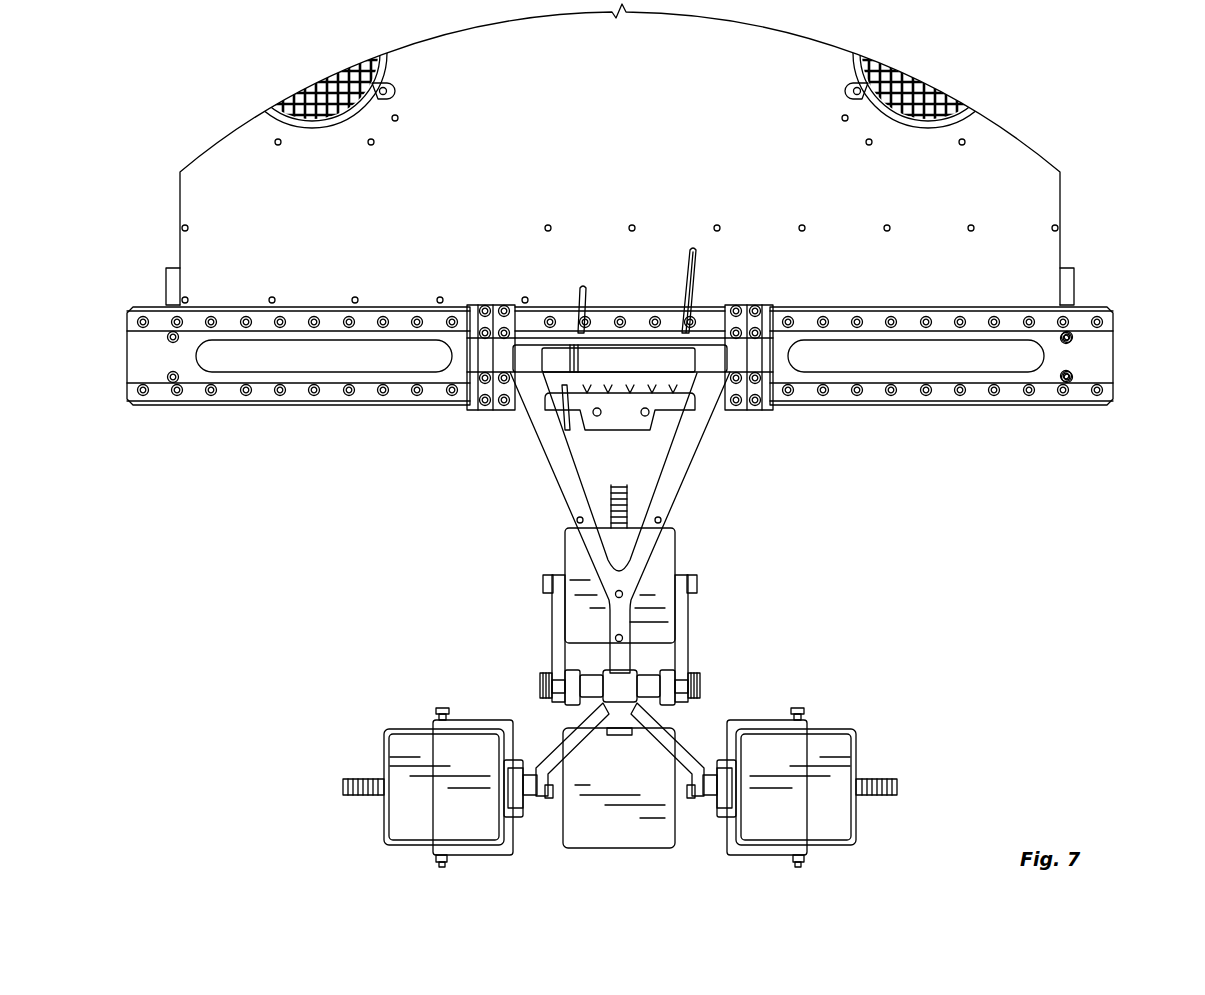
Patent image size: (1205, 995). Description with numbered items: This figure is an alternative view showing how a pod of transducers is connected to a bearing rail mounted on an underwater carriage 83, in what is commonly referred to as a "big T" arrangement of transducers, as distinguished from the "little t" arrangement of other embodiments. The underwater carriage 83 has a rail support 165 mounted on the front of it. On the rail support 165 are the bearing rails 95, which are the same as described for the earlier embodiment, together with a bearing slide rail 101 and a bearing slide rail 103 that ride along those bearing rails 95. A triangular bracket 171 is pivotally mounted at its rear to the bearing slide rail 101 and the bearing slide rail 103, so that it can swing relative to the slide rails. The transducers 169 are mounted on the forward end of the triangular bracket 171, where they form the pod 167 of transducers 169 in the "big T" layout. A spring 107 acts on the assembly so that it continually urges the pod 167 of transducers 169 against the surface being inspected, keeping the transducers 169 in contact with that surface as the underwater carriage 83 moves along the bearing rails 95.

The underwater carriage 83 is at (642, 151).
The bearing rails 95 is at (1082, 317).
The bearing slide rail 101 is at (728, 302).
The bearing slide rail 103 is at (468, 303).
The spring 107 is at (677, 296).
The rail support 165 is at (1113, 357).
The pod 167 is at (762, 618).
The transducers 169 is at (667, 563).
The triangular bracket 171 is at (553, 480).